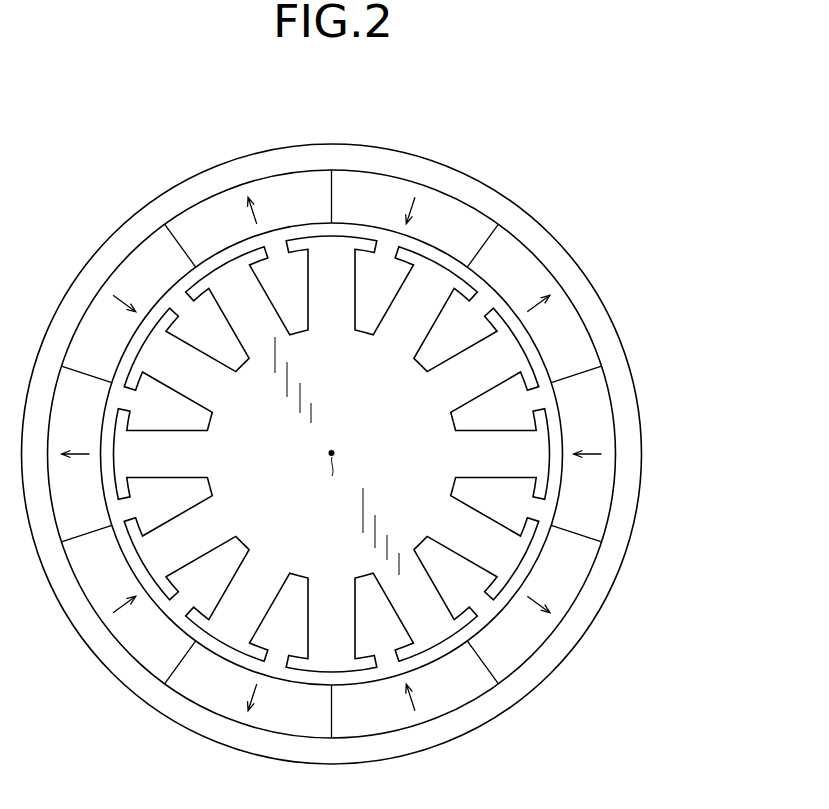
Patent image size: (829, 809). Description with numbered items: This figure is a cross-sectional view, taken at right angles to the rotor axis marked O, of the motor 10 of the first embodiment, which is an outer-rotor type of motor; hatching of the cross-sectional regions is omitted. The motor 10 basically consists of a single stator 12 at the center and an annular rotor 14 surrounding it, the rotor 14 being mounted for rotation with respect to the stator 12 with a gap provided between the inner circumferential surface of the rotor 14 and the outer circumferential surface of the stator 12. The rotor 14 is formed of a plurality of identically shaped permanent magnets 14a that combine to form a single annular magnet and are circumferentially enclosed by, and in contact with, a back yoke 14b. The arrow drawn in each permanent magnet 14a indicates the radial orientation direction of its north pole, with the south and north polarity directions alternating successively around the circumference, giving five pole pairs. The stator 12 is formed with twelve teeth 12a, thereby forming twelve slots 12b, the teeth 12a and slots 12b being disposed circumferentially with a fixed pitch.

The motor 10 is at (633, 104).
The stator 12 is at (552, 422).
The teeth 12a is at (530, 462).
The slots 12b is at (523, 506).
The rotor 14 is at (226, 160).
The permanent magnets 14a is at (363, 190).
The back yoke 14b is at (298, 160).